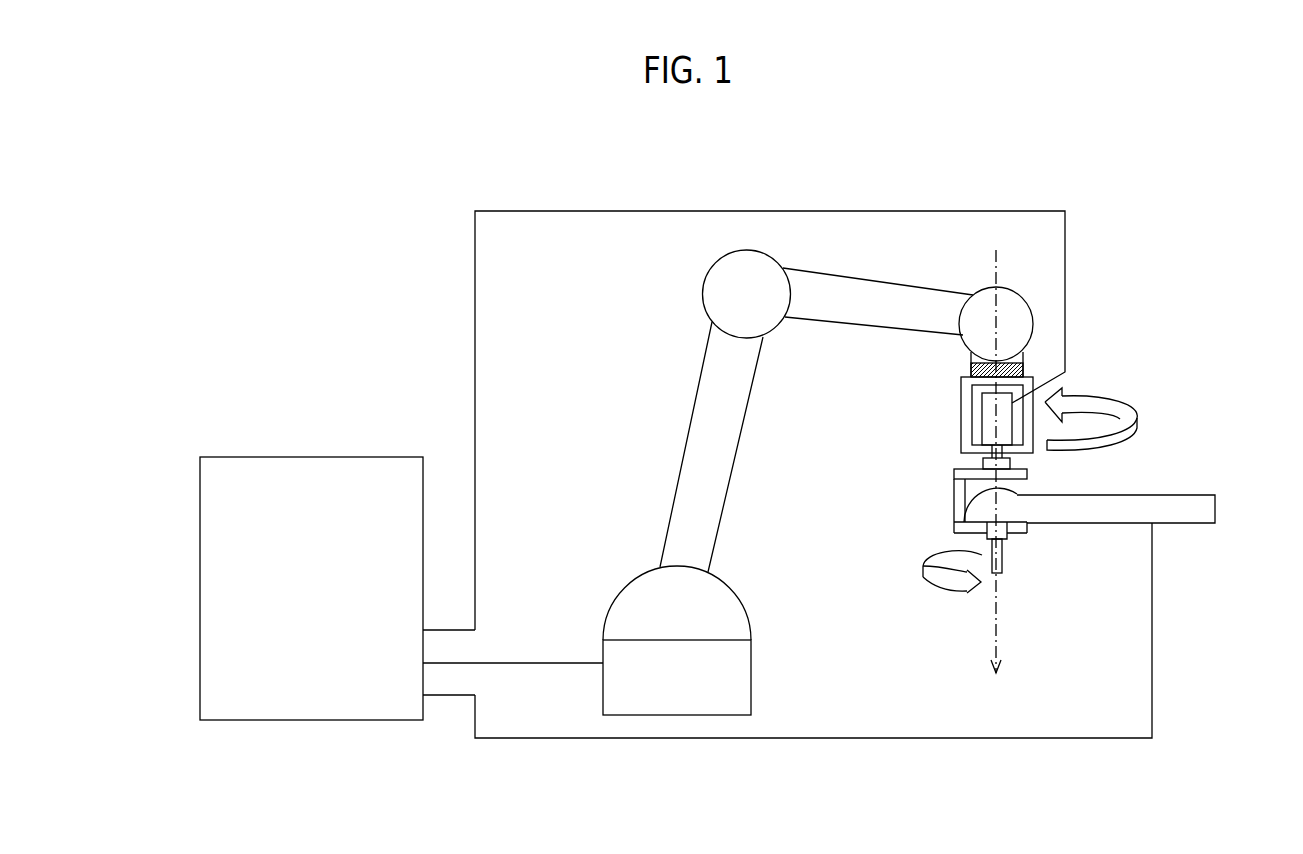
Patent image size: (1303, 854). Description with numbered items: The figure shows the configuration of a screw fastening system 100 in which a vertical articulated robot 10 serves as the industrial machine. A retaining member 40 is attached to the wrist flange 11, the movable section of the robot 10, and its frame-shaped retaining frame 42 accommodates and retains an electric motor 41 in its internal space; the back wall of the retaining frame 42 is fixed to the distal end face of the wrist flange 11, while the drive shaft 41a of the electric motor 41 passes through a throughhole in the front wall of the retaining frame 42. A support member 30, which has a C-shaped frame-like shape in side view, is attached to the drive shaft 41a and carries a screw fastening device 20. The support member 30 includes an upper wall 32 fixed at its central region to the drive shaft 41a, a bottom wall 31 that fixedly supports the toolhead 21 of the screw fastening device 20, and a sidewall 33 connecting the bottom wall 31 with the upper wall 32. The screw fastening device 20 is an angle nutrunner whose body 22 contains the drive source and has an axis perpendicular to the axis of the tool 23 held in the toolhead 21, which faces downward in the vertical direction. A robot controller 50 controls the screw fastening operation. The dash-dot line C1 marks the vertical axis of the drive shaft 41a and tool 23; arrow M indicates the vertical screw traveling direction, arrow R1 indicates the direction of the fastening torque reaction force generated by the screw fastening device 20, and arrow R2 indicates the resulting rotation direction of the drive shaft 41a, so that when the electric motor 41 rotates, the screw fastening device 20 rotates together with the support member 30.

The screw fastening system 100 is at (1163, 227).
The robot 10 is at (827, 472).
The wrist flange 11 is at (1028, 367).
The screw fastening device 20 is at (1118, 468).
The toolhead 21 is at (1012, 490).
The body 22 is at (1163, 497).
The tool 23 is at (1003, 555).
The support member 30 is at (997, 502).
The bottom wall 31 is at (954, 527).
The upper wall 32 is at (954, 471).
The sidewall 33 is at (954, 507).
The retaining member 40 is at (948, 405).
The electric motor 41 is at (982, 428).
The drive shaft 41a is at (992, 452).
The retaining frame 42 is at (961, 398).
The robot controller 50 is at (375, 457).
The axis C1 is at (996, 448).
The arrow M is at (996, 640).
The arrow R1 is at (935, 580).
The arrow R2 is at (1117, 399).